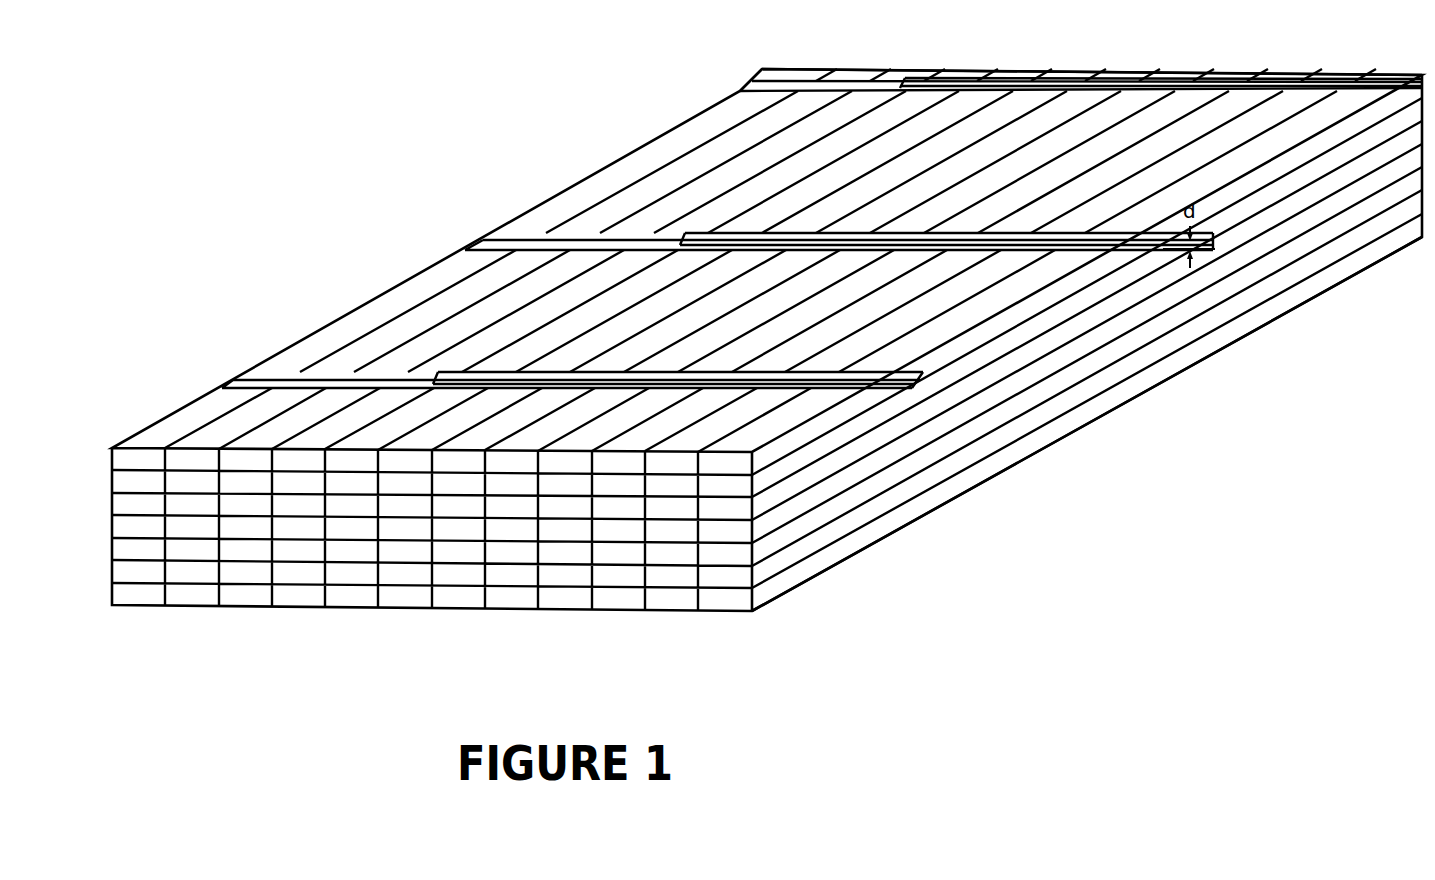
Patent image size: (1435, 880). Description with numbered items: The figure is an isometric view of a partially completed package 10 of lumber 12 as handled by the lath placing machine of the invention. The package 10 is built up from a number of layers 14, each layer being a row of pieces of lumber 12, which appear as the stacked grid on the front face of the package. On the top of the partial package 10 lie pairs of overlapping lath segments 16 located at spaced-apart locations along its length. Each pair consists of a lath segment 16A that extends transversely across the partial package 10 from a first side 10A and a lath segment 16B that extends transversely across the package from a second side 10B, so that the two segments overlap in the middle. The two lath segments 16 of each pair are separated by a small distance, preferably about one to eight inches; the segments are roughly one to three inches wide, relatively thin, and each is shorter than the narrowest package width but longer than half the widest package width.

The package 10 is at (362, 132).
The first side 10A is at (1354, 322).
The second side 10B is at (243, 332).
The lumber 12 is at (723, 600).
The layers 14 is at (960, 388).
The lath segments 16 is at (750, 91).
The lath segment 16A is at (950, 80).
The lath segment 16B is at (858, 87).